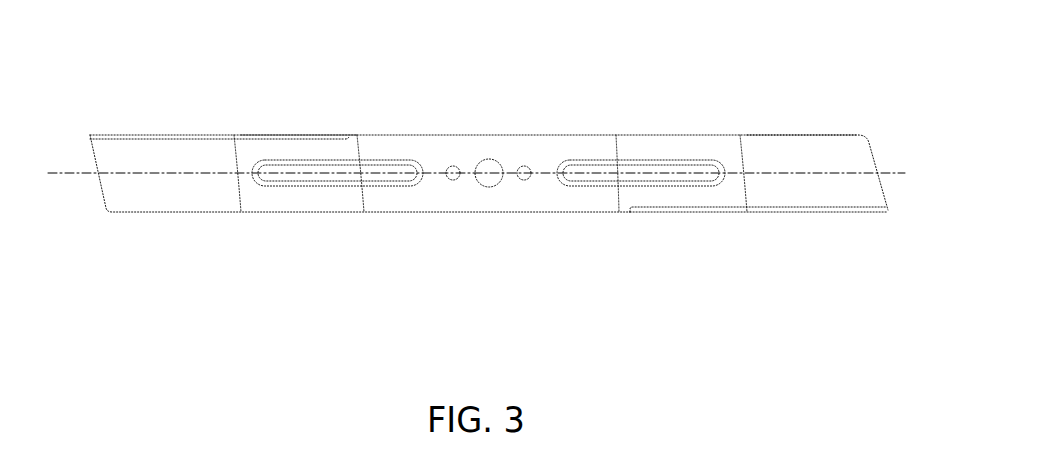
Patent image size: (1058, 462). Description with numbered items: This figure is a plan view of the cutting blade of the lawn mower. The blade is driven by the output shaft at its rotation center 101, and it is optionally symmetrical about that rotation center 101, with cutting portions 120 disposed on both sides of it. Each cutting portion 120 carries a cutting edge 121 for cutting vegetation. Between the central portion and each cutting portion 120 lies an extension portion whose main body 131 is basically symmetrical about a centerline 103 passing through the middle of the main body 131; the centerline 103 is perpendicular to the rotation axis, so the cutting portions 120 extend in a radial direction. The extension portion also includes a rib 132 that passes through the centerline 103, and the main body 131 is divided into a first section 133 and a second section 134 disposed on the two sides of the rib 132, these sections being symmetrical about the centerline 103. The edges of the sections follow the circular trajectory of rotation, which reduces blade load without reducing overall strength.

The rotation center 101 is at (490, 173).
The centerline 103 is at (112, 174).
The cutting portion 120 is at (834, 160).
The cutting edge 121 is at (765, 212).
The main body 131 is at (683, 148).
The rib 132 is at (645, 178).
The first section 133 is at (330, 142).
The second section 134 is at (315, 198).